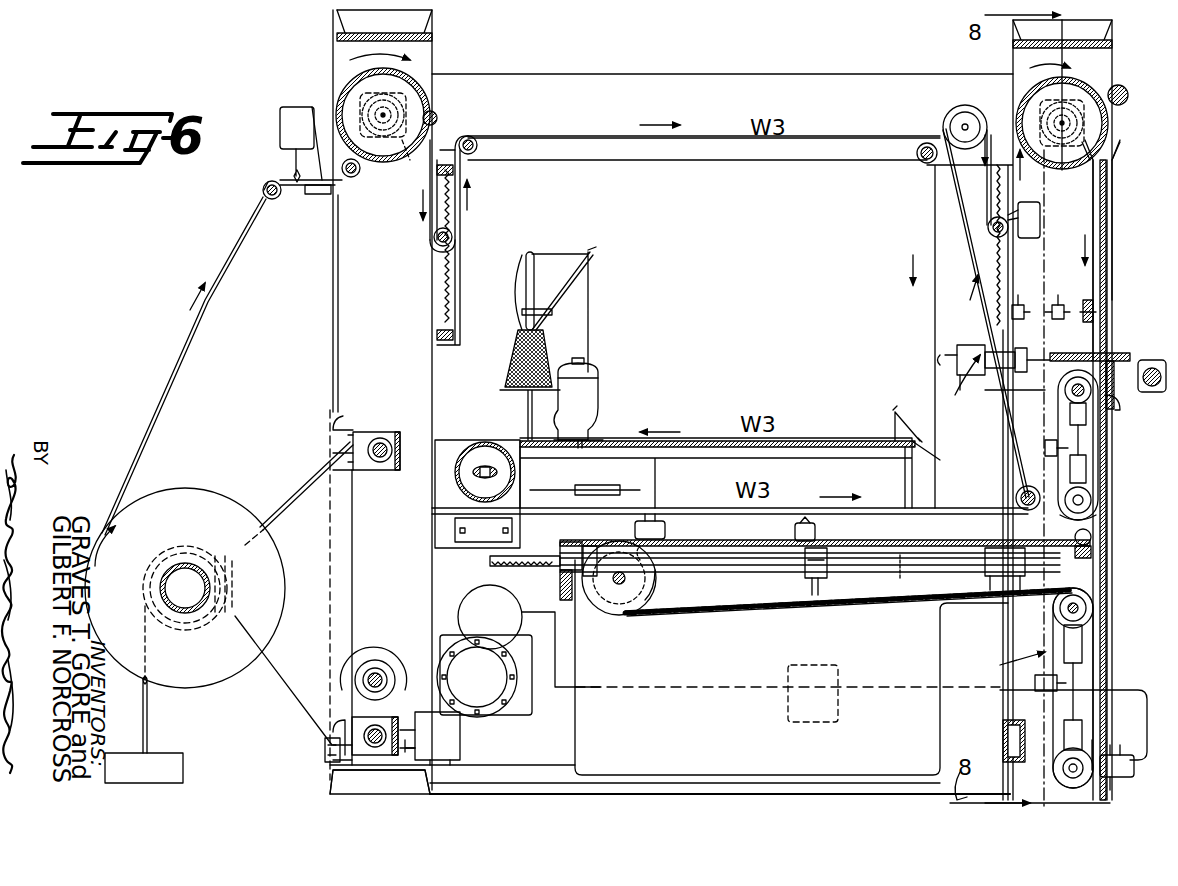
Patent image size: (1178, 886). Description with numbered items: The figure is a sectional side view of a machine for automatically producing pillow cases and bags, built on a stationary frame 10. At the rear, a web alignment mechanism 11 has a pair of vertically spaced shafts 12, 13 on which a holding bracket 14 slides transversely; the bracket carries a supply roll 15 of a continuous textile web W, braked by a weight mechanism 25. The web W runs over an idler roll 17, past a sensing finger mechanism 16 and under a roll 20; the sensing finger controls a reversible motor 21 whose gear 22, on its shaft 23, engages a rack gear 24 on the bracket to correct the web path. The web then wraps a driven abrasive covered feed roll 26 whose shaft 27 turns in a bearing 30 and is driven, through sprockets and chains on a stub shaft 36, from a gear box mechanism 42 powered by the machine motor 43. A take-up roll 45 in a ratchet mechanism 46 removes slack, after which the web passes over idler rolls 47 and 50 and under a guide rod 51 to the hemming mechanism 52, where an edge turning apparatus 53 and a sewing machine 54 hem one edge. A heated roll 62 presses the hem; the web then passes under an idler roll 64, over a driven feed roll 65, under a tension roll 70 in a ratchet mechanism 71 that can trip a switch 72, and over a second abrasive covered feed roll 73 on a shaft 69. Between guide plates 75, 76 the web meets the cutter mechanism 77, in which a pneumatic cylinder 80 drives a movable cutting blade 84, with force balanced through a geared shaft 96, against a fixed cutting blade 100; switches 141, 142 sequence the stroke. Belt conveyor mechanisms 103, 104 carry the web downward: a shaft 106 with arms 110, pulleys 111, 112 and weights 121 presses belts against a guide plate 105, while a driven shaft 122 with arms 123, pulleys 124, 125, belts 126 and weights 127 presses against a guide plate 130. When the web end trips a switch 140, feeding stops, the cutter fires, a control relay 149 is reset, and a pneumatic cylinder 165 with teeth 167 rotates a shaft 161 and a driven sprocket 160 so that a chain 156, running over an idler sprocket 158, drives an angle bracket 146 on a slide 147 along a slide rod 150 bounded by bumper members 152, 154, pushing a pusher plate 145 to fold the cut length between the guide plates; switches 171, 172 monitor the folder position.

The stationary frame 10 is at (652, 70).
The web alignment mechanism 11 is at (292, 465).
The shaft 12 is at (380, 450).
The shaft 13 is at (326, 748).
The holding bracket 14 is at (280, 695).
The supply roll 15 is at (175, 588).
The sensing finger mechanism 16 is at (288, 125).
The idler roll 17 is at (264, 200).
The roll 20 is at (353, 178).
The reversible motor 21 is at (445, 735).
The gear 22 is at (390, 710).
The shaft 23 is at (408, 750).
The rack gear 24 is at (405, 760).
The weight mechanism 25 is at (165, 757).
The abrasive covered feed roll 26 is at (427, 122).
The shaft 27 is at (383, 115).
The bearing 30 is at (383, 172).
The stub shaft 36 is at (378, 676).
The gear box mechanism 42 is at (484, 676).
The machine motor 43 is at (529, 636).
The take-up roll 45 is at (450, 237).
The ratchet mechanism 46 is at (445, 274).
The idler roll 47 is at (470, 150).
The idler roll 50 is at (918, 162).
The guide rod 51 is at (930, 440).
The hemming mechanism 52 is at (610, 432).
The edge turning apparatus 53 is at (848, 410).
The sewing machine 54 is at (585, 392).
The heated roll 62 is at (482, 442).
The idler roll 64 is at (1012, 496).
The driven feed roll 65 is at (940, 113).
The shaft 69 is at (1060, 122).
The roll 70 is at (990, 227).
The ratchet mechanism 71 is at (993, 255).
The switch 72 is at (1028, 238).
The abrasive covered feed roll 73 is at (1100, 68).
The guide plate 75 is at (1108, 218).
The guide plate 76 is at (1094, 218).
The cutter mechanism 77 is at (966, 390).
The pneumatic cylinder 80 is at (973, 348).
The movable cutting blade 84 is at (1098, 308).
The transversely extending shaft 96 is at (1155, 370).
The fixed cutting blade 100 is at (1115, 345).
The belt conveyor mechanism 103 is at (1055, 428).
The belt conveyor mechanism 104 is at (1003, 662).
The guide plate 105 is at (1083, 470).
The shaft 106 is at (1100, 440).
The arms 110 is at (1098, 492).
The pulleys 111 is at (1118, 410).
The pulleys 112 is at (1098, 514).
The weights 121 is at (1042, 448).
The driven shaft 122 is at (1086, 607).
The arms 123 is at (1085, 632).
The pulleys 124 is at (1093, 585).
The pulleys 125 is at (1060, 768).
The belts 126 is at (1056, 636).
The weights 127 is at (1035, 682).
The guide plate 130 is at (1100, 670).
The switch 140 is at (1126, 777).
The switch 141 is at (1020, 305).
The switch 142 is at (1058, 305).
The pusher plate 145 is at (876, 530).
The angle bracket 146 is at (600, 580).
The slide 147 is at (655, 588).
The control relay 149 is at (813, 665).
The slide rod 150 is at (740, 557).
The bumper member 152 is at (590, 542).
The bumper member 154 is at (1013, 588).
The chain 156 is at (722, 606).
The idler sprocket 158 is at (1055, 540).
The driven sprocket 160 is at (620, 583).
The rotatable shaft 161 is at (616, 590).
The pneumatic cylinder 165 is at (888, 570).
The teeth 167 is at (514, 563).
The switch 171 is at (650, 525).
The switch 172 is at (790, 525).
The web of textile material W is at (134, 422).